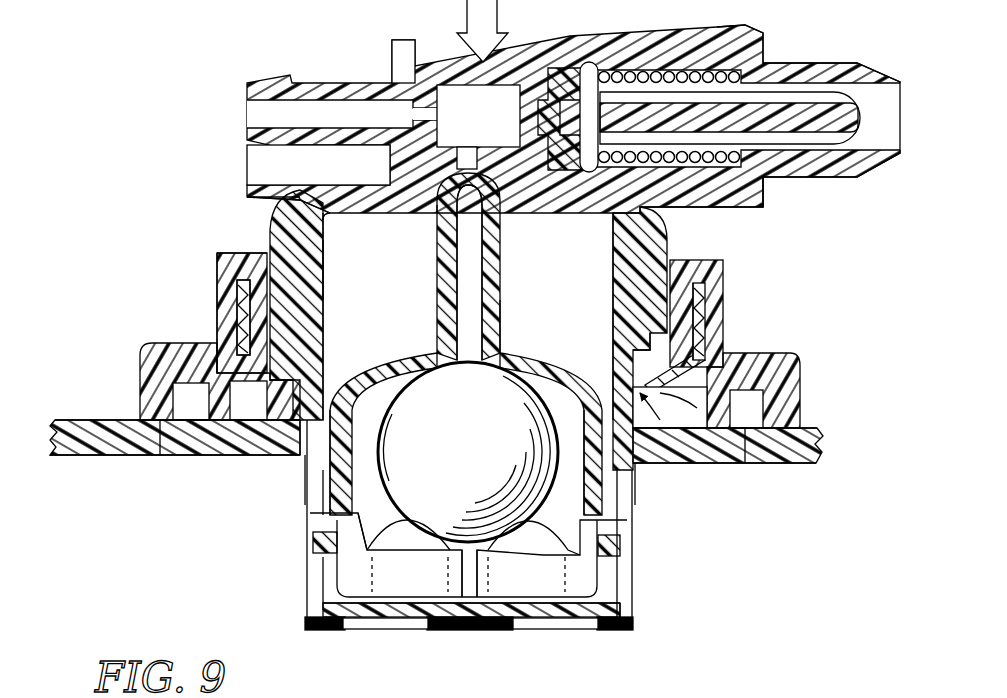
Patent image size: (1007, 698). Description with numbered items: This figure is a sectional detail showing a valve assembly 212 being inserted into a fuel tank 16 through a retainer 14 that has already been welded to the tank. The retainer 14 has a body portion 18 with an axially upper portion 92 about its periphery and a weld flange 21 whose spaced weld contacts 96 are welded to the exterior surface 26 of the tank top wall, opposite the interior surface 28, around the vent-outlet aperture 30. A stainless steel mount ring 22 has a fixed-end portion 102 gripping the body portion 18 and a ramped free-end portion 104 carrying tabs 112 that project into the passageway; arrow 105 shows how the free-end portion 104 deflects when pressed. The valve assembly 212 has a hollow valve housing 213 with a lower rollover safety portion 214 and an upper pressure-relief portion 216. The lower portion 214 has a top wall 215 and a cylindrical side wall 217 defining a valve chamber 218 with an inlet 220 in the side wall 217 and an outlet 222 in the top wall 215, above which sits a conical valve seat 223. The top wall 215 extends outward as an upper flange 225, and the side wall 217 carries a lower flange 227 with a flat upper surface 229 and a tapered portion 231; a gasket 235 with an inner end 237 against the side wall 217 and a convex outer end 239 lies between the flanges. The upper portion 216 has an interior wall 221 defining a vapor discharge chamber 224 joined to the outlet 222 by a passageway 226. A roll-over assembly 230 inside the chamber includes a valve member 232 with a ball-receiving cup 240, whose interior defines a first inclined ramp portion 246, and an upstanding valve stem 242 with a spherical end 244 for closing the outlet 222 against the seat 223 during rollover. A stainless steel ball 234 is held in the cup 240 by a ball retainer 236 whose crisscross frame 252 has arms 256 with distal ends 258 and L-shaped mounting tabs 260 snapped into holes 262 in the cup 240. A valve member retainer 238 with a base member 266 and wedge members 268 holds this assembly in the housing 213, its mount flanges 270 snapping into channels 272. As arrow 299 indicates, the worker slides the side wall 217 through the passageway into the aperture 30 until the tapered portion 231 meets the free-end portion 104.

The retainer 14 is at (807, 383).
The fuel tank 16 is at (97, 468).
The body portion 18 is at (208, 277).
The weld flange 21 is at (134, 356).
The mount ring 22 is at (708, 297).
The exterior surface 26 is at (72, 418).
The interior surface 28 is at (121, 456).
The vent-outlet aperture 30 is at (296, 462).
The axially upper portion 92 is at (233, 253).
The weld contacts 96 is at (205, 452).
The fixed-end portion 102 is at (702, 317).
The ramped free-end portion 104 is at (313, 340).
The deflection arrow 105 is at (172, 432).
The tabs 112 is at (215, 373).
The valve assembly 212 is at (773, 47).
The valve housing 213 is at (352, 68).
The lower rollover safety portion 214 is at (304, 520).
The top wall 215 is at (340, 212).
The upper pressure-relief portion 216 is at (441, 62).
The side wall 217 is at (324, 258).
The valve chamber 218 is at (590, 301).
The inlet 220 is at (655, 468).
The interior wall 221 is at (514, 93).
The outlet 222 is at (434, 214).
The valve seat 223 is at (507, 230).
The vapor discharge chamber 224 is at (530, 100).
The upper flange 225 is at (245, 180).
The passageway 226 is at (390, 160).
The lower flange 227 is at (262, 343).
The flat upper surface 229 is at (250, 317).
The roll-over assembly 230 is at (514, 328).
The tapered portion 231 is at (293, 460).
The valve member 232 is at (551, 364).
The ball 234 is at (485, 459).
The gasket 235 is at (267, 242).
The ball retainer 236 is at (350, 552).
The inner end 237 is at (329, 226).
The valve member retainer 238 is at (425, 548).
The outer end 239 is at (233, 277).
The ball-receiving cup 240 is at (338, 408).
The valve stem 242 is at (498, 265).
The spherical end 244 is at (457, 228).
The first inclined ramp portion 246 is at (385, 372).
The crisscross frame 252 is at (607, 597).
The arms 256 is at (432, 576).
The distal end 258 is at (330, 582).
The mounting tab 260 is at (314, 535).
The holes 262 is at (563, 528).
The base member 266 is at (565, 617).
The wedge members 268 is at (383, 537).
The mount flanges 270 is at (310, 628).
The channels 272 is at (622, 610).
The insertion arrow 299 is at (465, 15).